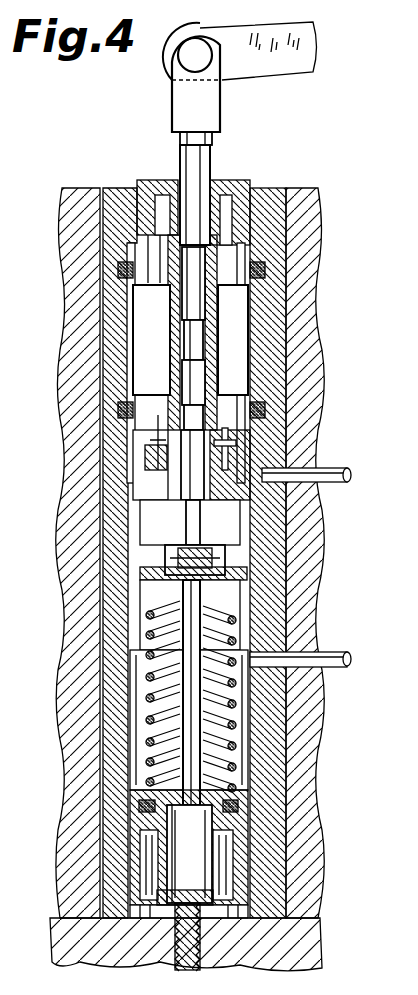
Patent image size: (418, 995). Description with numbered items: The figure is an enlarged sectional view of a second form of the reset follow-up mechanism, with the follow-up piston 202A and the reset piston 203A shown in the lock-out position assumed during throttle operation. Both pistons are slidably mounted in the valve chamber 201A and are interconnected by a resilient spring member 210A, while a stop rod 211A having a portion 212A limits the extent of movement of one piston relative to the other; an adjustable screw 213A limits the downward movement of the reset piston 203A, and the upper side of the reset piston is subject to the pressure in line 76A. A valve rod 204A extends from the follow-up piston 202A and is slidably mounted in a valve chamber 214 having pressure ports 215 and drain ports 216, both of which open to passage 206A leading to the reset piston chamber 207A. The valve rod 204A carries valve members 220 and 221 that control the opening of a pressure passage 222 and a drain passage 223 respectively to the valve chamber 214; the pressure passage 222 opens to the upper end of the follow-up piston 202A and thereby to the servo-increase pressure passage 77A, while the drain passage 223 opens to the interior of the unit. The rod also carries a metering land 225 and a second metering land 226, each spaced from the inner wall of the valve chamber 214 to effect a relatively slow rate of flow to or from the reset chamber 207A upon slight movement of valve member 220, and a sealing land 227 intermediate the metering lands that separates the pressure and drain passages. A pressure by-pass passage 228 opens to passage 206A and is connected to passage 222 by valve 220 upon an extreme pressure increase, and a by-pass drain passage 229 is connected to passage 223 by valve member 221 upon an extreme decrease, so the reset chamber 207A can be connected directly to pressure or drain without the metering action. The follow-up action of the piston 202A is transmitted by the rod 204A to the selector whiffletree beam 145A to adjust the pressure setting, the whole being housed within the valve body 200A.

The selector whiffletree beam 145A is at (268, 63).
The valve member 221 is at (193, 208).
The drain passage 223 is at (227, 202).
The valve chamber 214 is at (207, 273).
The by-pass drain passage 229 is at (160, 240).
The second metering land 226 is at (187, 283).
The passage 206A is at (113, 337).
The drain ports 216 is at (191, 340).
The land 227 is at (195, 337).
The metering land 225 is at (215, 376).
The pressure ports 215 is at (230, 386).
The pressure by-pass passage 228 is at (160, 435).
The servo-increase pressure passage 77A is at (333, 468).
The valve body 200A is at (75, 487).
The valve member 220 is at (196, 473).
The pressure passage 222 is at (190, 522).
The valve rod 204A is at (188, 532).
The follow-up piston 202A is at (140, 575).
The valve chamber 201A is at (143, 655).
The resilient spring member 210A is at (153, 683).
The line 76A is at (332, 652).
The stop rod 211A is at (187, 738).
The reset piston 203A is at (132, 788).
The portion of stop rod 212A is at (150, 812).
The adjustable screw 213A is at (177, 947).
The reset piston chamber 207A is at (217, 912).